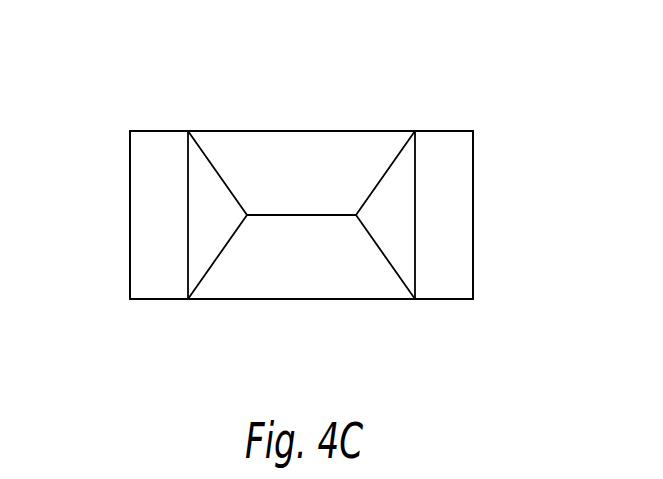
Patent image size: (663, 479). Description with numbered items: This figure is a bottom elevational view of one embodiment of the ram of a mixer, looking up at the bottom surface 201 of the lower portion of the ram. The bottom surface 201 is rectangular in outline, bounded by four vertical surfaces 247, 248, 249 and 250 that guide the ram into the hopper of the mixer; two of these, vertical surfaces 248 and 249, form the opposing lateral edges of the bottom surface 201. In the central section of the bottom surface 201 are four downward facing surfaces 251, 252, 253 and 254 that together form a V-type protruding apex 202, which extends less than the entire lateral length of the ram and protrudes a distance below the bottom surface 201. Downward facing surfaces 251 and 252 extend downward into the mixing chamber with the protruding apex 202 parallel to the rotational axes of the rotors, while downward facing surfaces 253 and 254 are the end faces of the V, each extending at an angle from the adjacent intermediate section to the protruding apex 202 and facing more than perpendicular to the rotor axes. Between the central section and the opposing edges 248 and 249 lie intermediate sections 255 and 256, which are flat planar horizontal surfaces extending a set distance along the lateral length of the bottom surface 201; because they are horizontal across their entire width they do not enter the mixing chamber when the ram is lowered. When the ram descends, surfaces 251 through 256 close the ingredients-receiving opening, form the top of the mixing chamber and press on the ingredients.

The bottom surface 201 is at (248, 117).
The protruding apex 202 is at (292, 218).
The vertical surface 247 is at (341, 127).
The vertical surface 248 is at (477, 184).
The vertical surface 249 is at (130, 170).
The vertical surface 250 is at (326, 306).
The downward facing surface 251 is at (368, 152).
The downward facing surface 252 is at (375, 275).
The downward facing surface 253 is at (213, 195).
The downward facing surface 254 is at (397, 219).
The intermediate section 255 is at (442, 163).
The intermediate section 256 is at (158, 157).